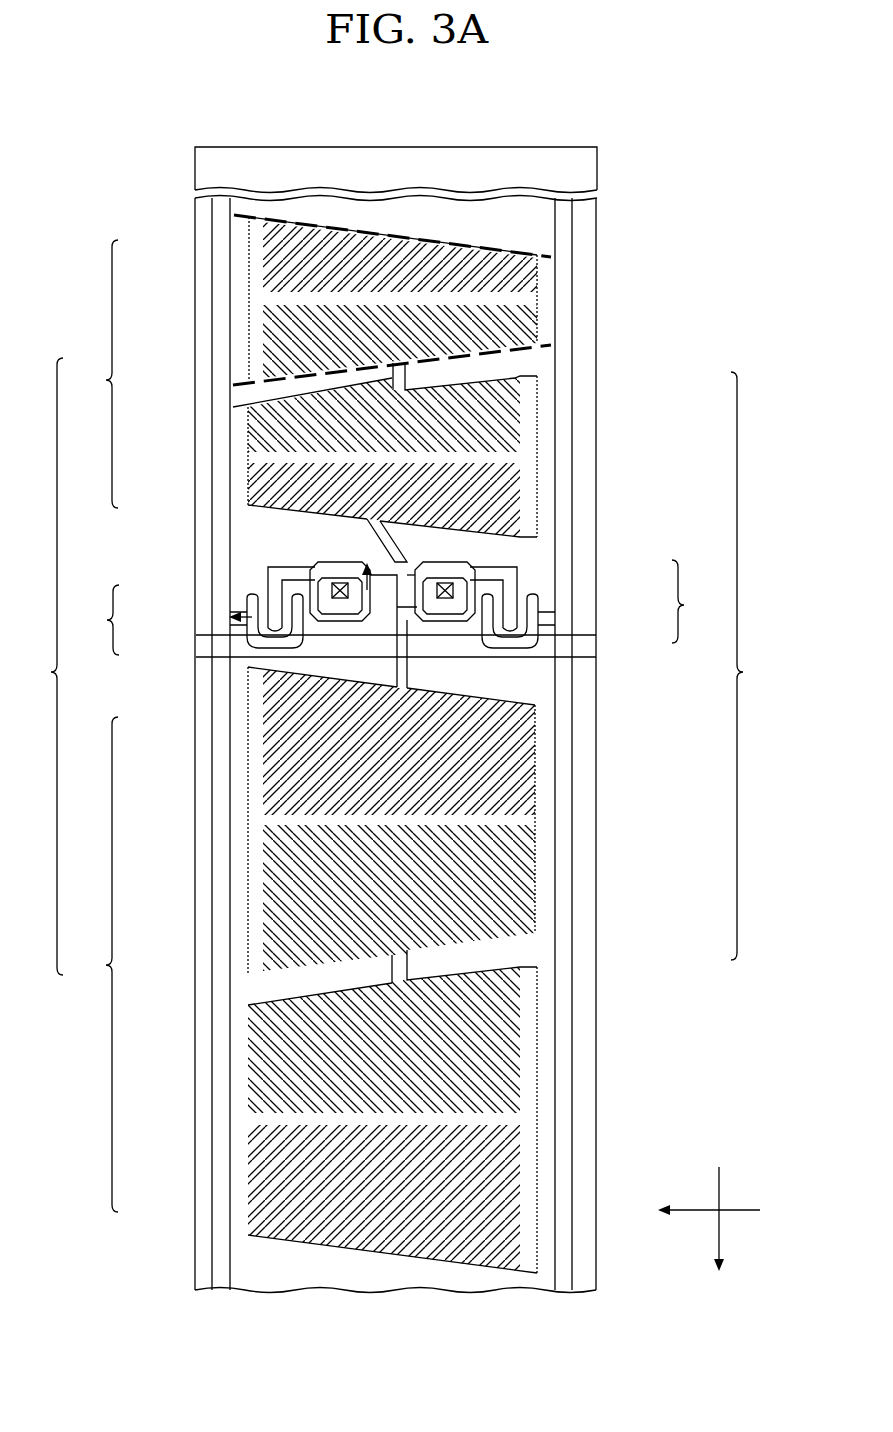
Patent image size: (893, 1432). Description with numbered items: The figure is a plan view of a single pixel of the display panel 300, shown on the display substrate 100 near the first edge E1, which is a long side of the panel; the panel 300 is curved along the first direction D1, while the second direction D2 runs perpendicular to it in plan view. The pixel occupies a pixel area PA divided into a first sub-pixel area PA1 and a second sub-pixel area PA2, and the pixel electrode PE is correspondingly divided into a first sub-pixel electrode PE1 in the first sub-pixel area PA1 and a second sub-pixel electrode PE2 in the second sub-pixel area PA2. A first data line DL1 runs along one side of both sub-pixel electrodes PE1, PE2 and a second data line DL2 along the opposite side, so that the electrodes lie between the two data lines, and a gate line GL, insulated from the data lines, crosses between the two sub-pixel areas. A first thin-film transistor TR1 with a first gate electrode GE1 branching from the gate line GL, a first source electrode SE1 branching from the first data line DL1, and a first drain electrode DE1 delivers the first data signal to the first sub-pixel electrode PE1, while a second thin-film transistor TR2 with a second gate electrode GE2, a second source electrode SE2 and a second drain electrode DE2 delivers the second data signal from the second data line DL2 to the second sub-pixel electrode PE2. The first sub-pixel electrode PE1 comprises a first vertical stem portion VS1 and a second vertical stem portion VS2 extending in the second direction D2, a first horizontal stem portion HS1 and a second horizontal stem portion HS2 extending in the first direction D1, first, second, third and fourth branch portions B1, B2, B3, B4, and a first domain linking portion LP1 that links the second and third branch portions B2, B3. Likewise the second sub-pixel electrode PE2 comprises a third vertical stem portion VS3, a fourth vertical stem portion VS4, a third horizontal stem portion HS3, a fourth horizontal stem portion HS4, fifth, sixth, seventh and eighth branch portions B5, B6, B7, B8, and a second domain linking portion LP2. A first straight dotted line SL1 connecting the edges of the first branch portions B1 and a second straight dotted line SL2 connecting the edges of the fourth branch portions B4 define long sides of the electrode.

The display panel 300 is at (552, 122).
The display substrate 100 is at (590, 292).
The first edge E1 is at (230, 147).
The first data line DL1 is at (222, 538).
The second data line DL2 is at (565, 419).
The first straight dotted line SL1 is at (555, 255).
The second straight dotted line SL2 is at (555, 348).
The gate line GL is at (590, 650).
The pixel electrode PE is at (346, 745).
The first sub-pixel electrode PE1 is at (367, 377).
The second sub-pixel electrode PE2 is at (367, 970).
The first vertical stem portion VS1 is at (250, 276).
The second vertical stem portion VS2 is at (540, 473).
The third vertical stem portion VS3 is at (250, 765).
The fourth vertical stem portion VS4 is at (538, 1082).
The first horizontal stem portion HS1 is at (290, 299).
The second horizontal stem portion HS2 is at (285, 457).
The third horizontal stem portion HS3 is at (288, 820).
The fourth horizontal stem portion HS4 is at (290, 1119).
The first branch portions B1 is at (262, 244).
The second branch portions B2 is at (268, 342).
The third branch portions B3 is at (265, 428).
The fourth branch portions B4 is at (265, 495).
The fifth branch portions B5 is at (262, 726).
The sixth branch portions B6 is at (268, 873).
The seventh branch portions B7 is at (265, 1033).
The eighth branch portions B8 is at (265, 1201).
The first domain linking portion LP1 is at (300, 393).
The second domain linking portion LP2 is at (395, 970).
The first thin-film transistor TR1 is at (243, 603).
The second thin-film transistor TR2 is at (564, 604).
The first gate electrode GE1 is at (272, 572).
The first source electrode SE1 is at (240, 618).
The first drain electrode DE1 is at (268, 639).
The second gate electrode GE2 is at (525, 594).
The second source electrode SE2 is at (545, 630).
The second drain electrode DE2 is at (515, 567).
The pixel area PA is at (640, 667).
The first sub-pixel area PA1 is at (520, 367).
The second sub-pixel area PA2 is at (520, 958).
The first direction D1 is at (694, 1211).
The second direction D2 is at (719, 1234).